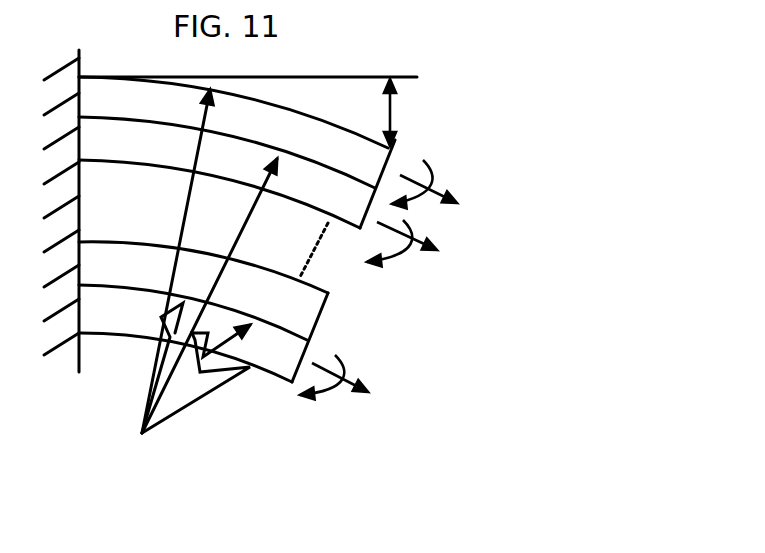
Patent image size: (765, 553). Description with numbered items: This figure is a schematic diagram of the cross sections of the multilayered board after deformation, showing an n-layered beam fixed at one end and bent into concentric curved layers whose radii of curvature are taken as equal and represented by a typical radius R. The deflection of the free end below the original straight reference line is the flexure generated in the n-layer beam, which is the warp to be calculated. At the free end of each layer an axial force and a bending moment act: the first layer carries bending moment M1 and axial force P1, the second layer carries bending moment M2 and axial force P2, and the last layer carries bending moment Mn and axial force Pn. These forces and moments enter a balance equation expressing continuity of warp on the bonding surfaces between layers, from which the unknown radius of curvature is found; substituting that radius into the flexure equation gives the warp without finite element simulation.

The bending moment of the first layer M1 is at (433, 180).
The axial force of the first layer P1 is at (450, 199).
The bending moment of the second layer M2 is at (396, 263).
The axial force of the second layer P2 is at (433, 250).
The bending moment of the n-th layer Mn is at (325, 400).
The axial force of the n-th layer Pn is at (366, 392).